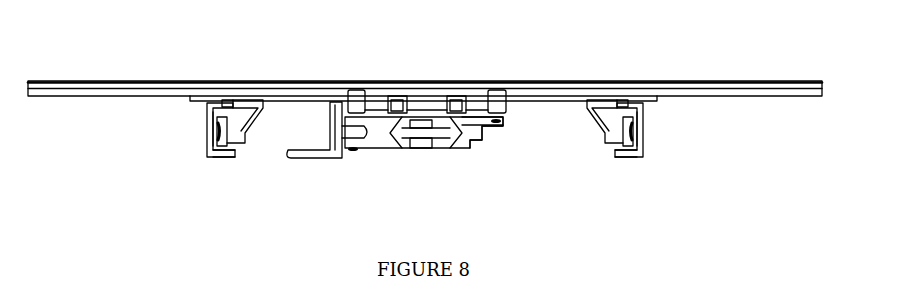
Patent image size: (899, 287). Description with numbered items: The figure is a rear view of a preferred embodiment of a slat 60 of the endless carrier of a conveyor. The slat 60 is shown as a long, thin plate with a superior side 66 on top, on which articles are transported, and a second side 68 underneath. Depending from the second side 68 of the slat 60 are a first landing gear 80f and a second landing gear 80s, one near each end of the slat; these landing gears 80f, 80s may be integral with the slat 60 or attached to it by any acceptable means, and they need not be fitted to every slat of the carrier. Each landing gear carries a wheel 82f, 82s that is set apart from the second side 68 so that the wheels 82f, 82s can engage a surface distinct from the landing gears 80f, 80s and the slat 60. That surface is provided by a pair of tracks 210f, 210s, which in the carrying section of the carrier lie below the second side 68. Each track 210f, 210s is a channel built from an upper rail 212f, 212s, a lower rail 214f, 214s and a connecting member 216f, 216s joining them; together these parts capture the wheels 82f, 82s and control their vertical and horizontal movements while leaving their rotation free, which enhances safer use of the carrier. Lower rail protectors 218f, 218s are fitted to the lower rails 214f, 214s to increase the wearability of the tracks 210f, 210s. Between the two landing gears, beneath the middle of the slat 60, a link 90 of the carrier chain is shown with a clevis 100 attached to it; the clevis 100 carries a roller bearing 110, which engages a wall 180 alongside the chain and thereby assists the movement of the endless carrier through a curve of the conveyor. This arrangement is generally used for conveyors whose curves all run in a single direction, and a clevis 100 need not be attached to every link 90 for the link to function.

The slat 60 is at (823, 87).
The superior side 66 is at (751, 82).
The second side 68 is at (778, 97).
The landing gear 80f is at (207, 118).
The landing gear 80s is at (605, 130).
The wheel 82f is at (220, 117).
The wheel 82s is at (628, 115).
The link 90 is at (460, 157).
The clevis 100 is at (377, 157).
The roller bearing 110 is at (343, 158).
The wall 180 is at (323, 158).
The track 210f is at (207, 143).
The track 210s is at (645, 127).
The upper rail 212f is at (223, 100).
The upper rail 212s is at (627, 107).
The lower rail 214f is at (212, 160).
The lower rail 214s is at (638, 160).
The connecting member 216f is at (205, 128).
The connecting member 216s is at (645, 145).
The lower rail protector 218f is at (237, 148).
The lower rail protector 218s is at (618, 160).